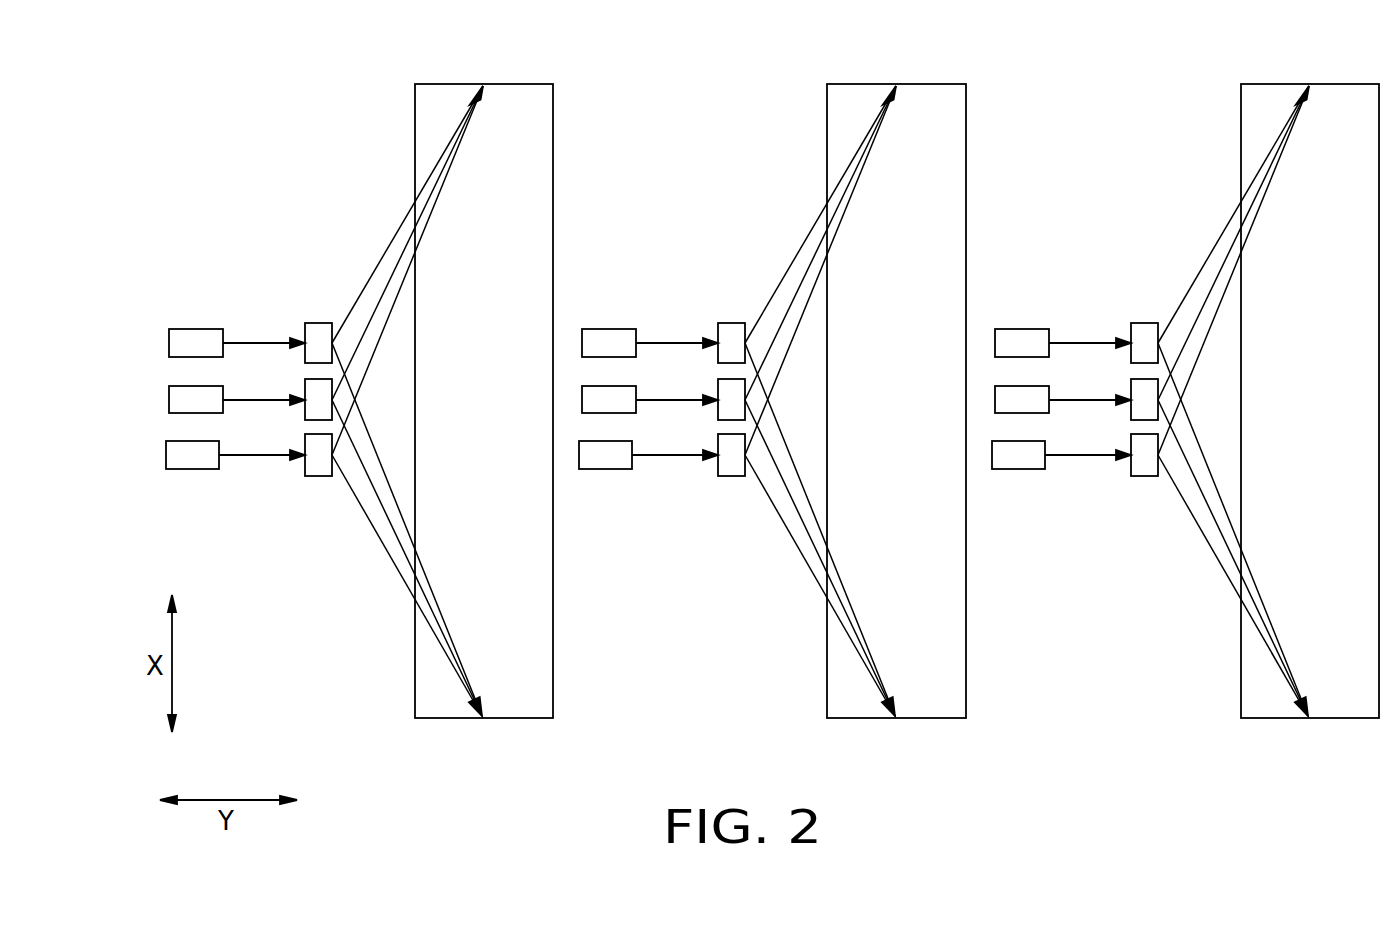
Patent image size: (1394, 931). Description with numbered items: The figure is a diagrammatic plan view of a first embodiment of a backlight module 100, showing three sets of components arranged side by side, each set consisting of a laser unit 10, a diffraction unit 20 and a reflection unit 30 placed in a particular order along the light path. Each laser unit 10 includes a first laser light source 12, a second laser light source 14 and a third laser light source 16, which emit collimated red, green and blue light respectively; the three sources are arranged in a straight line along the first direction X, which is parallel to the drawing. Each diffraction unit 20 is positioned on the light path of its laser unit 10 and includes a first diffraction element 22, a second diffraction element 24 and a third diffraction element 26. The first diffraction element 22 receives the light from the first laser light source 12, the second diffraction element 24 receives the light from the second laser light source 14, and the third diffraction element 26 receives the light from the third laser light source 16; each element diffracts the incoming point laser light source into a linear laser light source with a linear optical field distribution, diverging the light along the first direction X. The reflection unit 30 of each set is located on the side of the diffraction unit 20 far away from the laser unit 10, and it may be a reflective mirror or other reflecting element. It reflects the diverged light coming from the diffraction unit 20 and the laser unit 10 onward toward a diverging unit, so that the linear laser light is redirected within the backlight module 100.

The backlight module 100 is at (298, 83).
The laser unit 10 is at (198, 315).
The first laser light source 12 is at (188, 338).
The second laser light source 14 is at (183, 400).
The third laser light source 16 is at (172, 452).
The diffraction unit 20 is at (318, 483).
The first diffraction element 22 is at (319, 328).
The second diffraction element 24 is at (318, 385).
The third diffraction element 26 is at (310, 448).
The reflection unit 30 is at (537, 98).